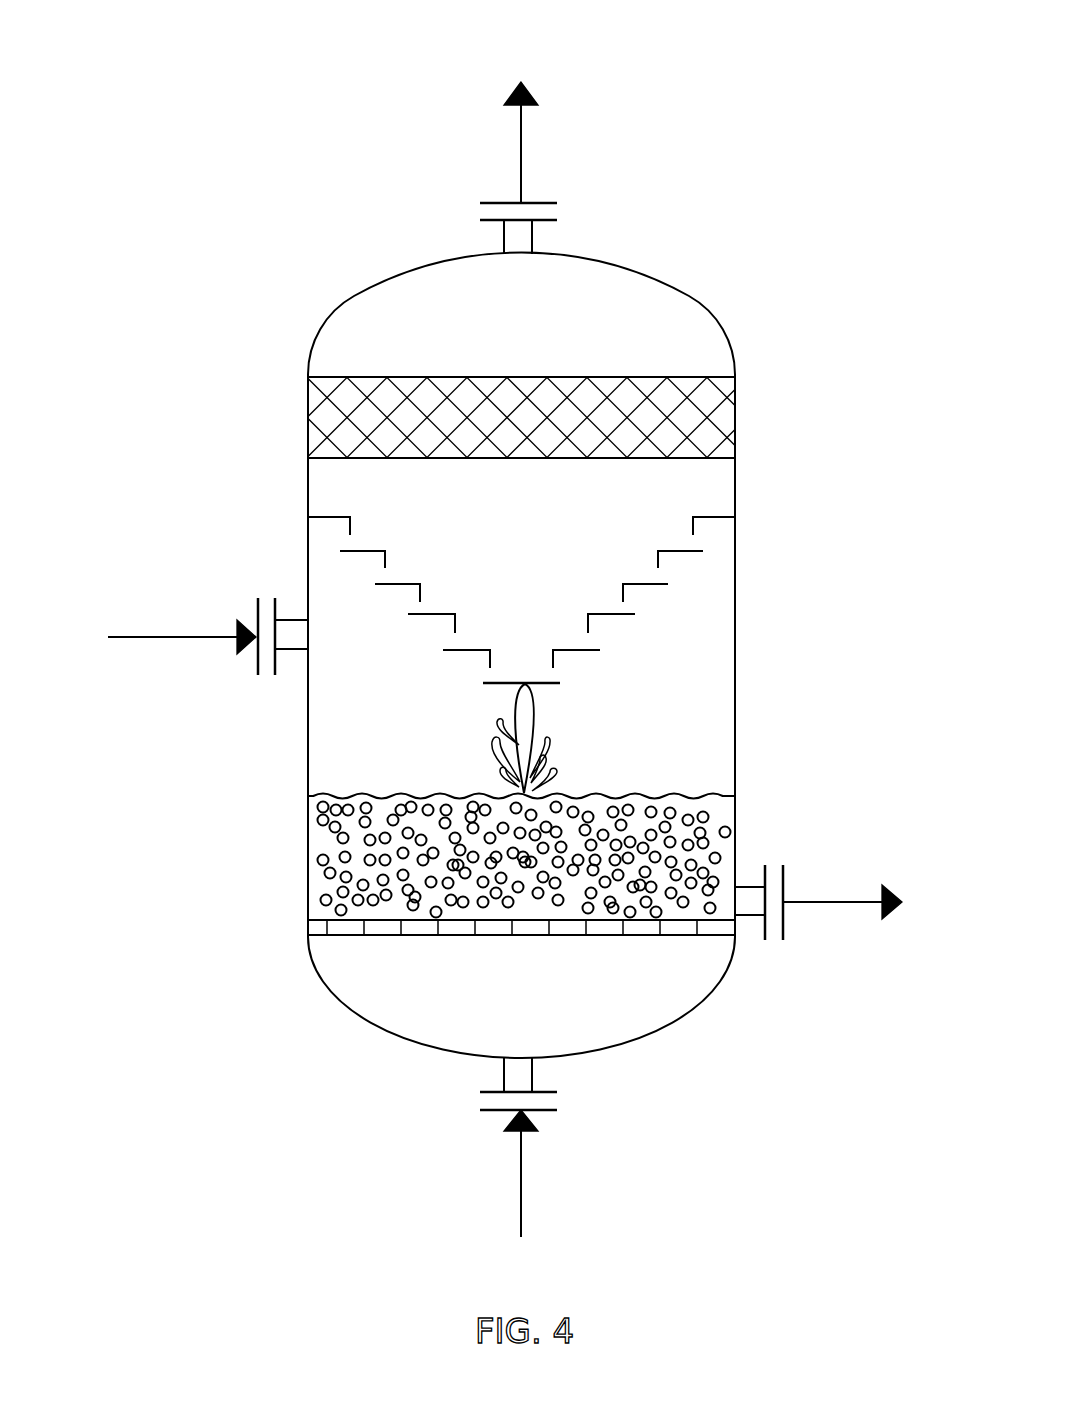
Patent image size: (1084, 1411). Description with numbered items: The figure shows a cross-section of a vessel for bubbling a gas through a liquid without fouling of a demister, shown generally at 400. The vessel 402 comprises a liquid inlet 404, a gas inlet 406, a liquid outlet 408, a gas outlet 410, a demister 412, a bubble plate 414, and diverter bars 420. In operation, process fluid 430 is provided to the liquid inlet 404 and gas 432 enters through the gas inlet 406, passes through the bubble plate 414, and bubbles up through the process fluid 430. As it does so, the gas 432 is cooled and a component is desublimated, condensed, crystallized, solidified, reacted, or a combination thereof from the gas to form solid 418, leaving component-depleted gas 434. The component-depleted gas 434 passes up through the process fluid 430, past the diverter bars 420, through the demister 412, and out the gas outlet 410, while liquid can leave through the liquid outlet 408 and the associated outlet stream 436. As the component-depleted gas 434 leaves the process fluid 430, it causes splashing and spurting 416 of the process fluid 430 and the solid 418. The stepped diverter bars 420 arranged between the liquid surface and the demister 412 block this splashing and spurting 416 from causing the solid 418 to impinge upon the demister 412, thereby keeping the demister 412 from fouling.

The vessel for bubbling a gas through a liquid without fouling of a demister 400 is at (158, 67).
The vessel 402 is at (345, 308).
The liquid inlet 404 is at (290, 653).
The gas inlet 406 is at (538, 1073).
The liquid outlet 408 is at (752, 947).
The gas outlet 410 is at (537, 235).
The demister 412 is at (307, 422).
The bubble plate 414 is at (307, 923).
The splashing and spurting 416 is at (537, 705).
The solid 418 is at (735, 827).
The diverter bars 420 is at (718, 647).
The process fluid 430 is at (320, 838).
The gas 432 is at (523, 1194).
The component-depleted gas 434 is at (521, 125).
The liquid outlet stream 436 is at (873, 903).